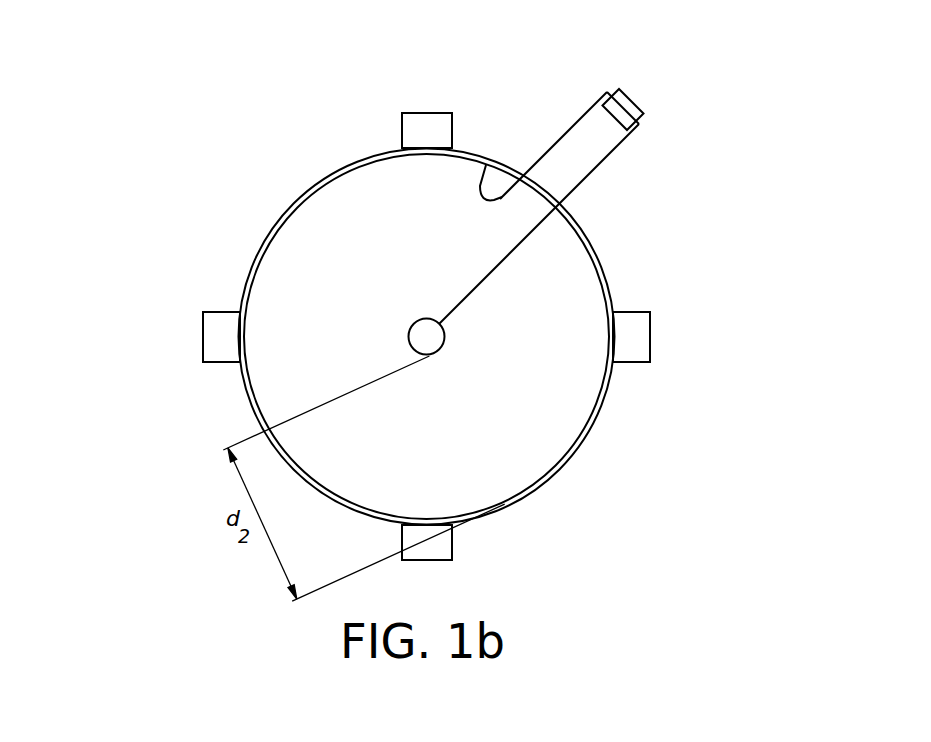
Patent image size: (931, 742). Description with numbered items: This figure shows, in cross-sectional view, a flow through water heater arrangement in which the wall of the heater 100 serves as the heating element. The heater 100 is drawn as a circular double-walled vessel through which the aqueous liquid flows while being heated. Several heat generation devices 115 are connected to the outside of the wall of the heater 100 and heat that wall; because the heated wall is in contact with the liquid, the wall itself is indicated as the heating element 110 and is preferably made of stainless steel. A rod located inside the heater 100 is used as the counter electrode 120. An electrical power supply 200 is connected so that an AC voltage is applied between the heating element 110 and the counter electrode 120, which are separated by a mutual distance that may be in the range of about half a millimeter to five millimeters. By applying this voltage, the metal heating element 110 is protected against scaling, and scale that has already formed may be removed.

The heater 100 is at (425, 311).
The heating element 110 is at (607, 283).
The heat generation device 115 is at (423, 133).
The counter electrode 120 is at (420, 330).
The electrical power supply 200 is at (647, 90).